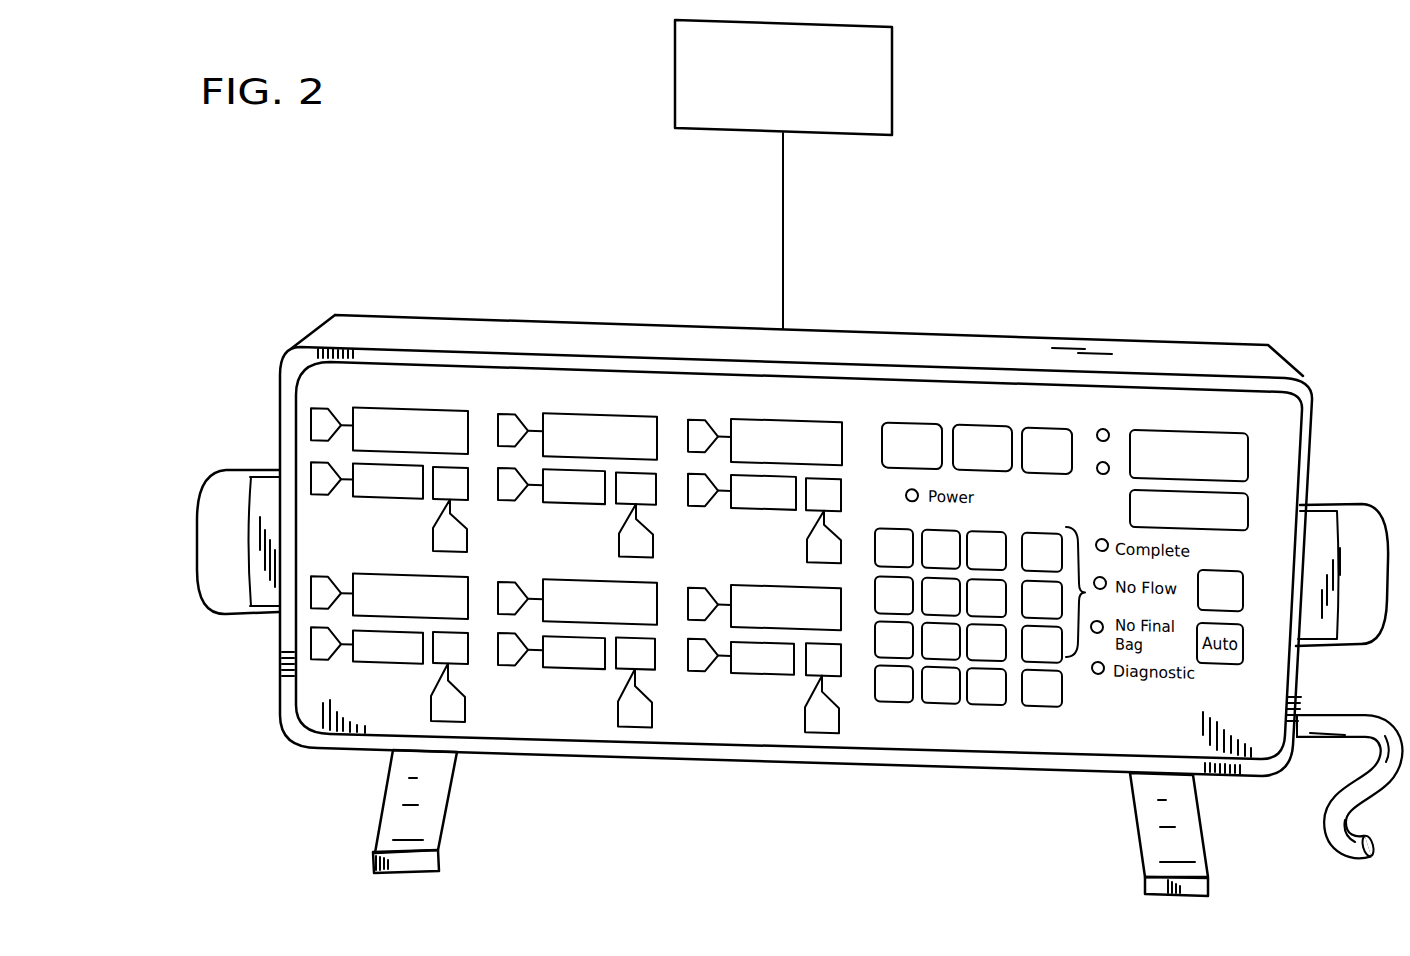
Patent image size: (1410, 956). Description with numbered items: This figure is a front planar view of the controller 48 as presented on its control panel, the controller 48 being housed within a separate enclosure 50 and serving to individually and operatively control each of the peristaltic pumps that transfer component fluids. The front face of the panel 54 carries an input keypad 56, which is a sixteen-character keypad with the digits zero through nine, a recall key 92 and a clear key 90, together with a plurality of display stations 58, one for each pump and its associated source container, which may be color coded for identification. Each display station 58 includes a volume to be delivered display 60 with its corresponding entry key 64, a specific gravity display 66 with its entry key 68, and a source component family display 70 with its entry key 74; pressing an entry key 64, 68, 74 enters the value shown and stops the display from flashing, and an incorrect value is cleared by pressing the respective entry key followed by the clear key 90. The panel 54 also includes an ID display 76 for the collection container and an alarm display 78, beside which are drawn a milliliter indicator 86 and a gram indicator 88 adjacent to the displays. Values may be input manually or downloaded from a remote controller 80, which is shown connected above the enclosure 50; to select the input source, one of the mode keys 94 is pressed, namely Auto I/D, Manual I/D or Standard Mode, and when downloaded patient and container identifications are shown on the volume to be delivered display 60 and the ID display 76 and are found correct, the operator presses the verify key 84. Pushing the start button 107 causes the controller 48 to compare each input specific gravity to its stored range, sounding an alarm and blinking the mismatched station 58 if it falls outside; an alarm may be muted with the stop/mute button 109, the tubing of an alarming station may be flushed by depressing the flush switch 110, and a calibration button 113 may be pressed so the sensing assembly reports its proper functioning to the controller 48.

The controller 48 is at (899, 302).
The enclosure 50 is at (382, 333).
The panel 54 is at (622, 392).
The input keypad 56 is at (930, 703).
The display station 58 is at (458, 407).
The volume to be delivered display 60 is at (383, 406).
The entry key 64 is at (311, 428).
The specific gravity display 66 is at (370, 498).
The entry key 68 is at (312, 478).
The source component family display 70 is at (470, 485).
The entry key 74 is at (468, 534).
The ID display 76 is at (1192, 430).
The alarm display 78 is at (1248, 505).
The remote controller 80 is at (892, 97).
The verify key 84 is at (1053, 703).
The ml indicator 86 is at (1103, 428).
The g indicator 88 is at (1103, 476).
The clear key 90 is at (983, 703).
The recall key 92 is at (895, 703).
The mode keys 94 is at (1068, 530).
The start button 107 is at (911, 423).
The stop/mute button 109 is at (981, 437).
The flush switch 110 is at (1048, 428).
The calibration button 113 is at (1222, 570).